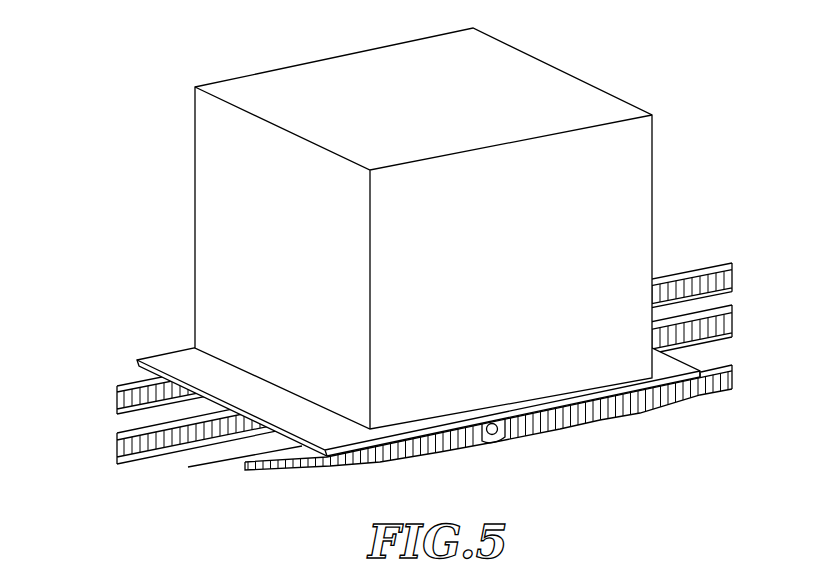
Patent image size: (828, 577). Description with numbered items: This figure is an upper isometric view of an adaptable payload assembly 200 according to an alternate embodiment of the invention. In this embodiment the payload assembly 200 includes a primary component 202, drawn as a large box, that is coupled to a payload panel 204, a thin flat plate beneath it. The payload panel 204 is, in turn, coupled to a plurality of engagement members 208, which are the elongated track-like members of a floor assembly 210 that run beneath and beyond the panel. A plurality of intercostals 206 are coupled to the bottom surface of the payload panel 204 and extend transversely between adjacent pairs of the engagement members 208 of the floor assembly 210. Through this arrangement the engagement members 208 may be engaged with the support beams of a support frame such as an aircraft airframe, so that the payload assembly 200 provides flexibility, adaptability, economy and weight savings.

The adaptable payload assembly 200 is at (130, 107).
The primary component 202 is at (625, 98).
The payload panel 204 is at (165, 354).
The intercostals 206 is at (603, 412).
The engagement members 208 is at (732, 291).
The floor assembly 210 is at (90, 411).